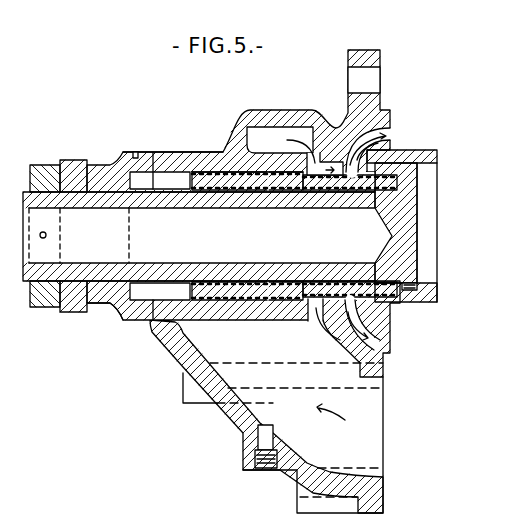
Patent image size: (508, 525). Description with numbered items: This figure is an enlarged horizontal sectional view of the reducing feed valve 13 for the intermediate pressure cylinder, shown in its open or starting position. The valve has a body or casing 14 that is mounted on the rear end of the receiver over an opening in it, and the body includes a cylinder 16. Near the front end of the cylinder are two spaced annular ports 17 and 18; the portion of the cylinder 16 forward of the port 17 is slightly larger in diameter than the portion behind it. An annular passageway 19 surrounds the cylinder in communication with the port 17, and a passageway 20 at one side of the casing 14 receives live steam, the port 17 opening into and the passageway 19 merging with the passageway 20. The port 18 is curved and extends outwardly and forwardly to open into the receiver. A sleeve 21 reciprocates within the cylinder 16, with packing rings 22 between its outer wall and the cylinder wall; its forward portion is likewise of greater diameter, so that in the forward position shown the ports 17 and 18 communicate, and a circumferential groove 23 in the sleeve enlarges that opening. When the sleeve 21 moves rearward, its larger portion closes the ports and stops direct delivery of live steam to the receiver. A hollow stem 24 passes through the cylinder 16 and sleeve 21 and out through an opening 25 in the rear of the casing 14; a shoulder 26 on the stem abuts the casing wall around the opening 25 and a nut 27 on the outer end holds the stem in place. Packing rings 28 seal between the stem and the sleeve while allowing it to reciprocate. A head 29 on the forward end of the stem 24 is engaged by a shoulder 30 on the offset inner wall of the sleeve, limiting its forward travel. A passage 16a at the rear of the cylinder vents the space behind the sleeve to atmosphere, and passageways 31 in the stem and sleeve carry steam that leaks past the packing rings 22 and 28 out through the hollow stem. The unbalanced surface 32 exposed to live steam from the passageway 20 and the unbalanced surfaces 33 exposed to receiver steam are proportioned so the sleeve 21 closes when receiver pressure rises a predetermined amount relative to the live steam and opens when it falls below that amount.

The valve 13 is at (152, 332).
The body or casing 14 is at (250, 138).
The cylinder 16 is at (160, 152).
The passage 16a is at (135, 152).
The annular port 17 is at (317, 160).
The annular port 18 is at (390, 140).
The annular passageway 19 is at (250, 170).
The passageway 20 is at (355, 443).
The sleeve 21 is at (213, 322).
The packing rings 22 is at (250, 167).
The circumferential groove 23 is at (317, 300).
The hollow stem 24 is at (175, 202).
The opening 25 is at (103, 300).
The shoulder 26 is at (110, 167).
The nut 27 is at (43, 165).
The packing rings 28 is at (210, 280).
The head 29 is at (412, 188).
The shoulder 30 is at (407, 160).
The passageways 31 is at (267, 232).
The unbalanced surface of the sleeve 32 is at (397, 333).
The unbalanced surfaces of the sleeve 33 is at (417, 288).